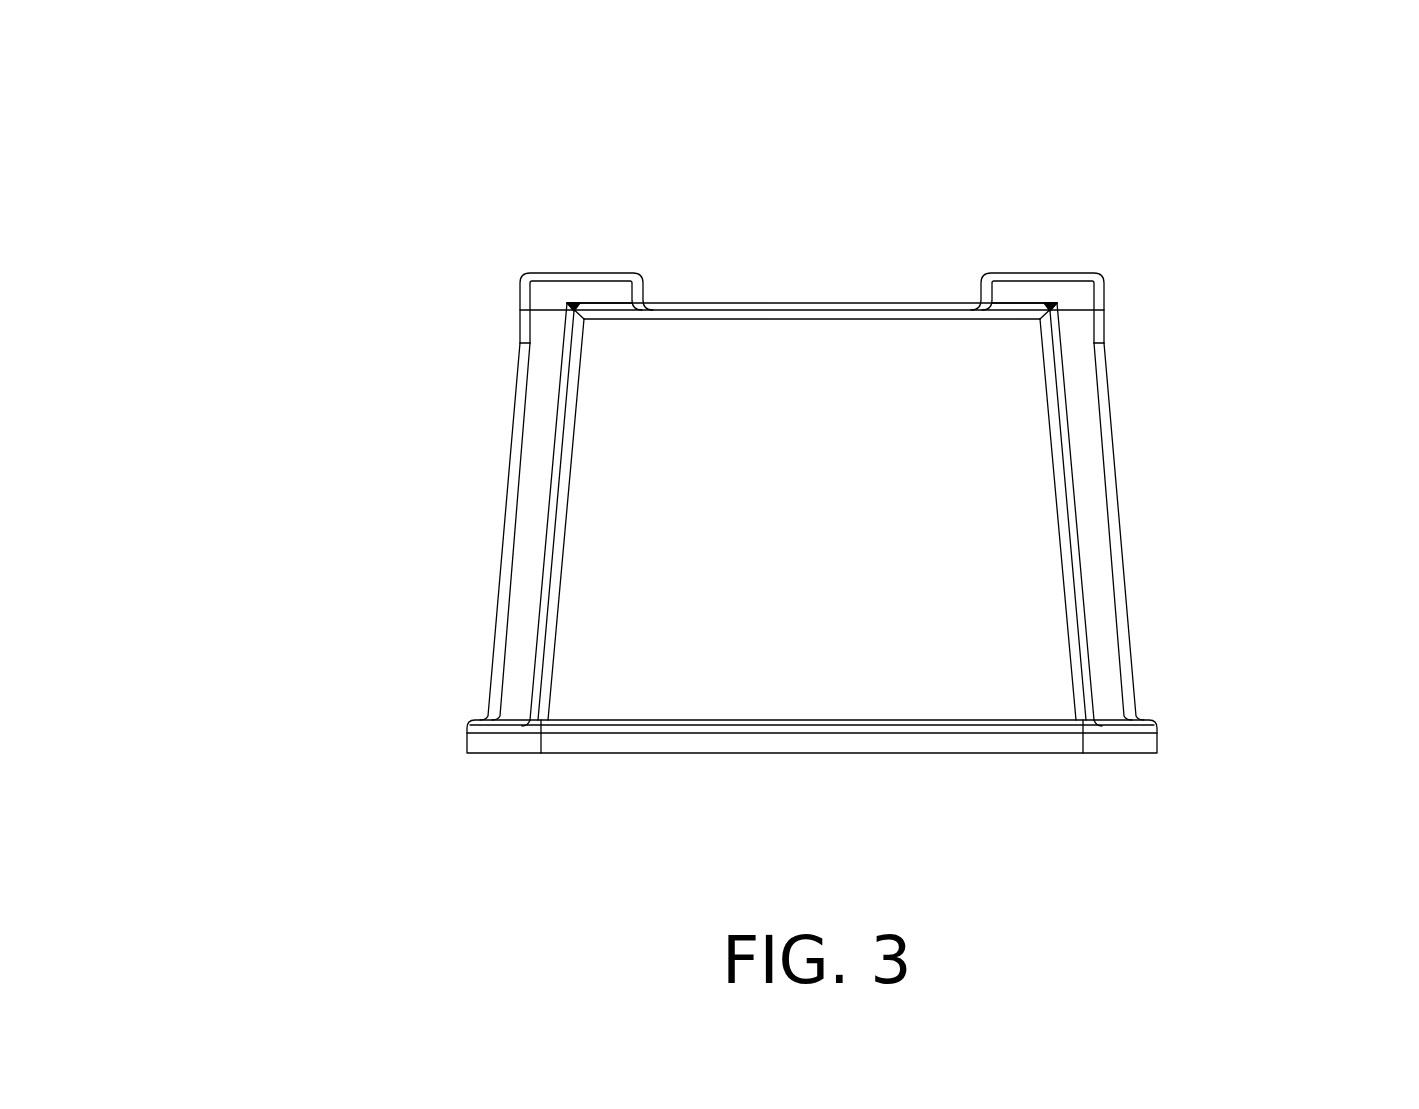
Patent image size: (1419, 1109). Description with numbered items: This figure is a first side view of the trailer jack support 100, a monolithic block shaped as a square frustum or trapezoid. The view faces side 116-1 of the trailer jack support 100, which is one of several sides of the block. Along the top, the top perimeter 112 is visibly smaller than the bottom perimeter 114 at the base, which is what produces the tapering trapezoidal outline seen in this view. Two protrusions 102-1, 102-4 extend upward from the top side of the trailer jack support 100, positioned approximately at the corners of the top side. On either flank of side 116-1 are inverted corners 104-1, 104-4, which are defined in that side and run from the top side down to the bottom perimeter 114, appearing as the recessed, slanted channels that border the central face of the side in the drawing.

The trailer jack support 100 is at (186, 93).
The protrusion 102-1 is at (568, 273).
The protrusion 102-4 is at (1056, 273).
The top perimeter 112 is at (768, 310).
The side 116-1 is at (625, 477).
The inverted corner 104-1 is at (514, 585).
The inverted corner 104-4 is at (1110, 493).
The bottom perimeter 114 is at (900, 722).